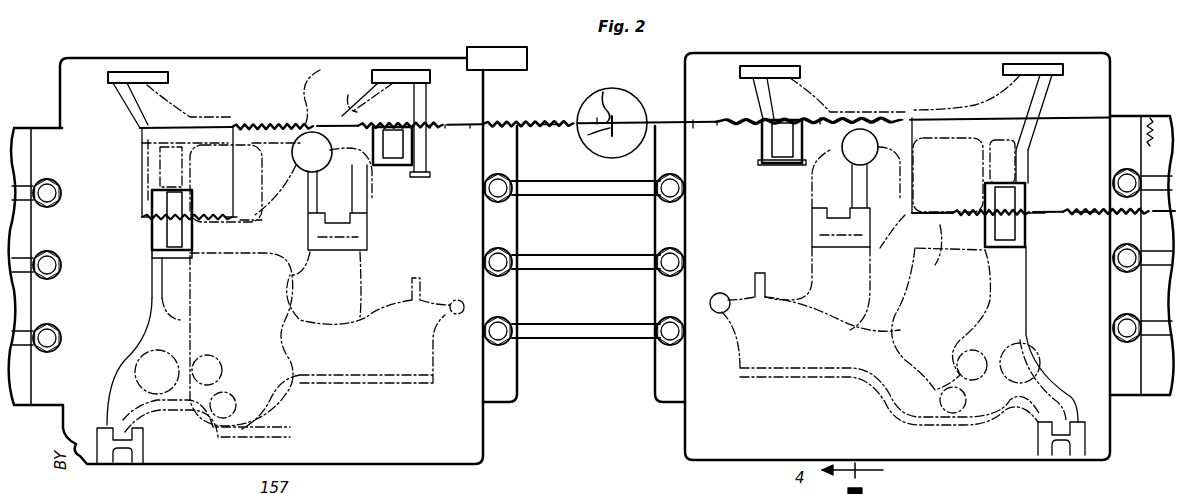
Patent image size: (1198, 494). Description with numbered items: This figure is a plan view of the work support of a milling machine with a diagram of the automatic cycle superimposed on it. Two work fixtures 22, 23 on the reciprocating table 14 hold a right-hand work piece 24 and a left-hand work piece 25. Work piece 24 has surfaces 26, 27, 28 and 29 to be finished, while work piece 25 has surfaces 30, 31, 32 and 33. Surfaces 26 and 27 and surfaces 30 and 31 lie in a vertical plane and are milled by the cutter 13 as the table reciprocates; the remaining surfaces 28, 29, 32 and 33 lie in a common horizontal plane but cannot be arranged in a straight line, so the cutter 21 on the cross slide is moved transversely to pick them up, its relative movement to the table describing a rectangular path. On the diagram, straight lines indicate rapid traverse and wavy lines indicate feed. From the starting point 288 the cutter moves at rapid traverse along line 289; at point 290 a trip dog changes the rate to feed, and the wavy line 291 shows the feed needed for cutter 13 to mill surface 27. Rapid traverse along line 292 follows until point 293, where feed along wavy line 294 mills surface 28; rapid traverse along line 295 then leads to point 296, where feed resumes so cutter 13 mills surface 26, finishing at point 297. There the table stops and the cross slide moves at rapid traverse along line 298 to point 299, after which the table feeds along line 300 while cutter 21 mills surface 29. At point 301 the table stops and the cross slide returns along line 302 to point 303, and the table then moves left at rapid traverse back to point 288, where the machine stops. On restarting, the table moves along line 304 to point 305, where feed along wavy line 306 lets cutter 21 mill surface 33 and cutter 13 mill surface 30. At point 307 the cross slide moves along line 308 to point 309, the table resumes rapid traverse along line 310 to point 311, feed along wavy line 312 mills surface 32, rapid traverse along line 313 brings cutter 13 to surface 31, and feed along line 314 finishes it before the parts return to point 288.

The cutter 13 is at (527, 58).
The table 14 is at (1155, 395).
The cutter 21 is at (622, 102).
The work fixture 22 is at (470, 440).
The work fixture 23 is at (1103, 448).
The work piece 24 is at (277, 420).
The work piece 25 is at (897, 413).
The surface 26 is at (142, 72).
The surface 27 is at (400, 70).
The surface 28 is at (405, 167).
The surface 29 is at (155, 240).
The surface 30 is at (782, 66).
The surface 31 is at (1037, 64).
The surface 32 is at (1028, 247).
The surface 33 is at (795, 165).
The point 288 is at (610, 95).
The line 289 is at (597, 118).
The point 290 is at (588, 135).
The wavy line 291 is at (555, 112).
The line 292 is at (470, 125).
The point 293 is at (445, 125).
The wavy line 294 is at (430, 125).
The line 295 is at (338, 95).
The point 296 is at (326, 93).
The point 297 is at (233, 127).
The line 298 is at (236, 186).
The point 299 is at (240, 220).
The line 300 is at (232, 217).
The point 301 is at (145, 217).
The line 302 is at (142, 175).
The point 303 is at (140, 128).
The line 304 is at (693, 120).
The point 305 is at (720, 128).
The wavy line 306 is at (822, 118).
The point 307 is at (912, 118).
The line 308 is at (915, 158).
The point 309 is at (920, 214).
The line 310 is at (930, 213).
The point 311 is at (948, 220).
The wavy line 312 is at (967, 230).
The line 313 is at (1035, 213).
The line 314 is at (1080, 212).